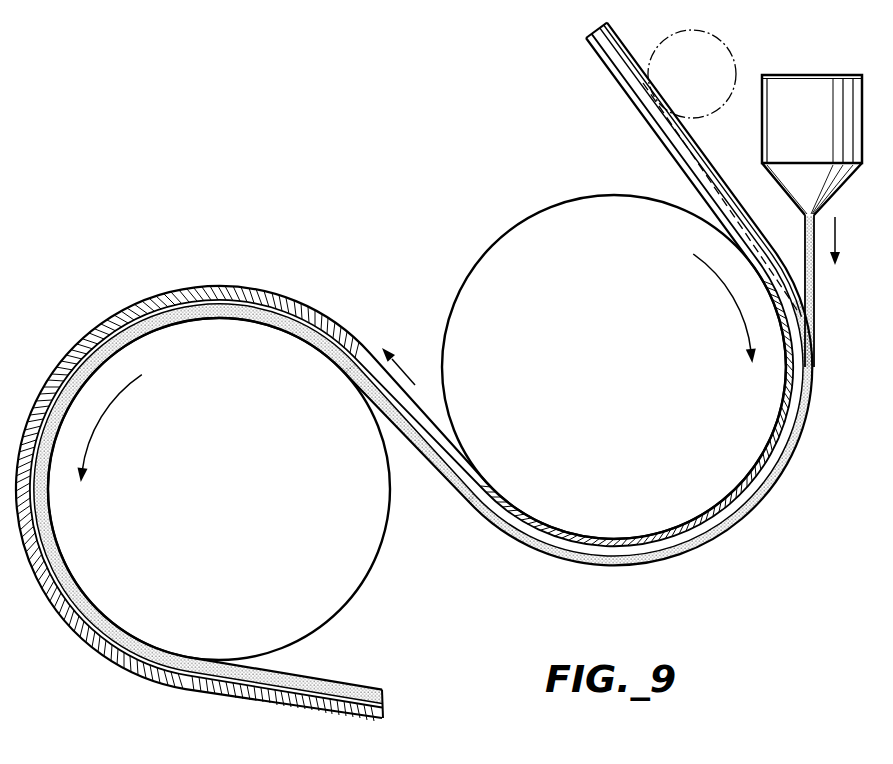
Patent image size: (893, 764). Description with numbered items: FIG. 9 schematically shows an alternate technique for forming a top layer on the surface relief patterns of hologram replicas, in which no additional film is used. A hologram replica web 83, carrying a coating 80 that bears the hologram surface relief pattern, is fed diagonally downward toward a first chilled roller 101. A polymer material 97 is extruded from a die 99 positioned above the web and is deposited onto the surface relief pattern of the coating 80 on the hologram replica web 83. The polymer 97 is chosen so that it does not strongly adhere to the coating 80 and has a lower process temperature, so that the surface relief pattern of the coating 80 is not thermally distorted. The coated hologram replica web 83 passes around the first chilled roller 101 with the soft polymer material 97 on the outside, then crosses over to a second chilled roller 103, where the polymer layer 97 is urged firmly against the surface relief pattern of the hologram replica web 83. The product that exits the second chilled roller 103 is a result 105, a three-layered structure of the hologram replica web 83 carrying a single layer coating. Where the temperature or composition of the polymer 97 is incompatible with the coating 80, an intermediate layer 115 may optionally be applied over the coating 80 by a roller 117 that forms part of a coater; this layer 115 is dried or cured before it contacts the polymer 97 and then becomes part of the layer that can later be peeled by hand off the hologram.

The coating 80 is at (605, 41).
The hologram replica web 83 is at (592, 28).
The polymer material 97 is at (816, 312).
The die 99 is at (817, 138).
The first chilled roller 101 is at (508, 250).
The second chilled roller 103 is at (340, 578).
The result 105 is at (386, 690).
The layer 115 is at (706, 164).
The roller 117 is at (704, 30).